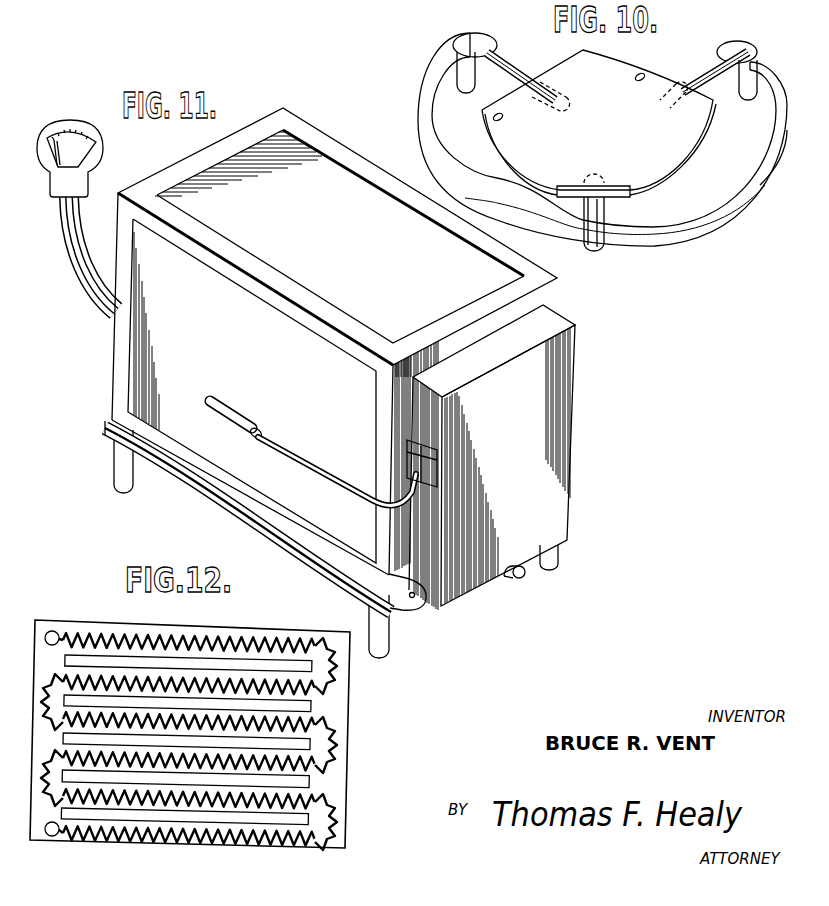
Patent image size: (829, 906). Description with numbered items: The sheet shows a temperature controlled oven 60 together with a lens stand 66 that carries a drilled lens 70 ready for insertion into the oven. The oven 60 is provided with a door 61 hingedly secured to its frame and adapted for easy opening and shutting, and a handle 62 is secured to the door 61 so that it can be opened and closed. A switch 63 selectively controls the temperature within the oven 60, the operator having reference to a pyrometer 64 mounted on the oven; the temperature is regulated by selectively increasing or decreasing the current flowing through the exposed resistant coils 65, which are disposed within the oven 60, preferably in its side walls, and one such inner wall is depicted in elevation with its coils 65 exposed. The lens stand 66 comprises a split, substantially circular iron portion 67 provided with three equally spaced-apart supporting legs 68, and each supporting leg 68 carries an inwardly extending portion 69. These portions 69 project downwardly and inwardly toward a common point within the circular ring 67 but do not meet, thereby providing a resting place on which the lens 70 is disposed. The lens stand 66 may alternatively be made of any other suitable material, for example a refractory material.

In FIG. 11, the temperature controlled oven 60 is at (329, 114).
In FIG. 11, the door 61 is at (565, 432).
In FIG. 11, the handle 62 is at (252, 427).
In FIG. 11, the switch 63 is at (518, 582).
In FIG. 11, the pyrometer 64 is at (82, 120).
In FIG. 12, the exposed resistant coils 65 is at (238, 644).
In FIG. 10, the lens stand 66 is at (683, 234).
In FIG. 10, the split substantially circular iron portion 67 is at (773, 180).
In FIG. 10, the supporting legs 68 is at (468, 107).
In FIG. 10, the inwardly extending portion 69 is at (528, 66).
In FIG. 10, the lens 70 is at (618, 72).